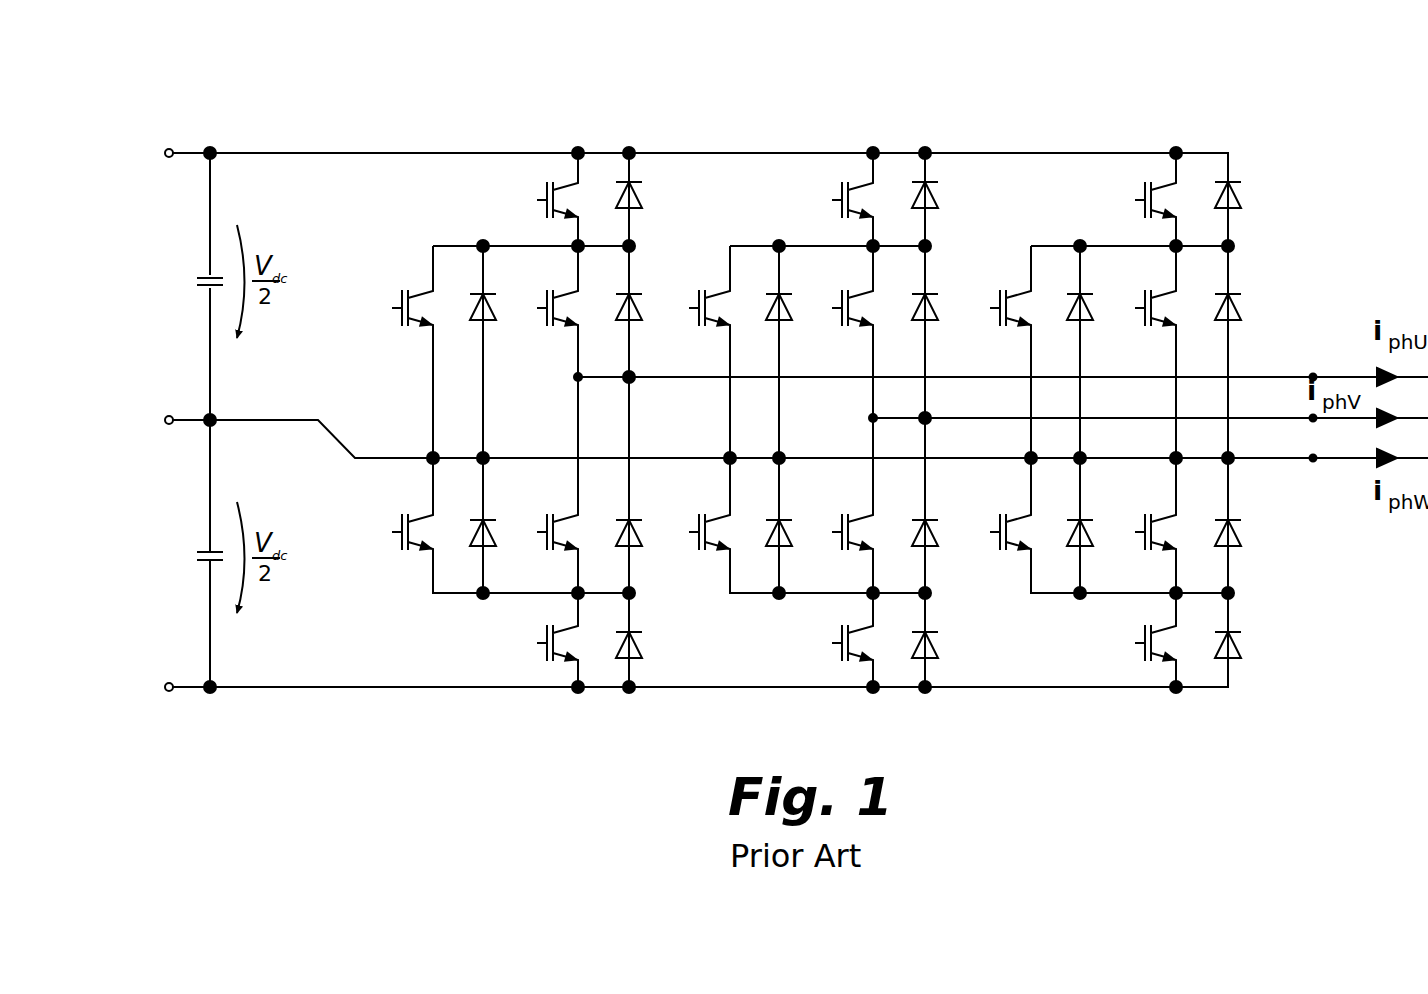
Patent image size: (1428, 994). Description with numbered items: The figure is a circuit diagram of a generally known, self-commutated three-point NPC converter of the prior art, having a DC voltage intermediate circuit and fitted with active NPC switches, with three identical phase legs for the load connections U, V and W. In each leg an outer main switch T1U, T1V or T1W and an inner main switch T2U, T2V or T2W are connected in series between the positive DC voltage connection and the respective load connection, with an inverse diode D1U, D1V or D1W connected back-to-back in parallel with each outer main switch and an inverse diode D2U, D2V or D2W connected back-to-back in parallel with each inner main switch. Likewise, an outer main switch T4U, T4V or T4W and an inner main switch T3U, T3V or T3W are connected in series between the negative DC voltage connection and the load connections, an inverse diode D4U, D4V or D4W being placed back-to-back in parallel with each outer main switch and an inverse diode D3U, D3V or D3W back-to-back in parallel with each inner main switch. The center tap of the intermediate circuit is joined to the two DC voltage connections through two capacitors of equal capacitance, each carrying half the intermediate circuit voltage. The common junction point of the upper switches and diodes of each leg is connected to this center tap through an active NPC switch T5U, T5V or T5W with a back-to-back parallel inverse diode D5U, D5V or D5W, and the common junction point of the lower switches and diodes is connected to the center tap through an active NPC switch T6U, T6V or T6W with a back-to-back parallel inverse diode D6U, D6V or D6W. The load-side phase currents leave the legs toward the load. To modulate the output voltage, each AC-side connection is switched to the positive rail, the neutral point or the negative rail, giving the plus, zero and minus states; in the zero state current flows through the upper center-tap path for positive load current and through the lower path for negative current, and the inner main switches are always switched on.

The outer main switch T1U is at (533, 200).
The inner main switch T2U is at (540, 312).
The inner main switch T3U is at (545, 525).
The outer main switch T4U is at (532, 643).
The active NPC switch T5U is at (388, 308).
The active NPC switch T6U is at (386, 532).
The inverse diode D1U is at (658, 194).
The inverse diode D2U is at (640, 310).
The inverse diode D3U is at (645, 535).
The inverse diode D4U is at (660, 651).
The inverse diode D5U is at (490, 304).
The inverse diode D6U is at (492, 535).
The outer main switch T1V is at (830, 200).
The inner main switch T2V is at (836, 315).
The inner main switch T3V is at (840, 526).
The outer main switch T4V is at (828, 643).
The active NPC switch T5V is at (698, 300).
The active NPC switch T6V is at (698, 542).
The inverse diode D1V is at (953, 193).
The inverse diode D2V is at (936, 310).
The inverse diode D3V is at (940, 537).
The inverse diode D4V is at (958, 651).
The inverse diode D5V is at (786, 305).
The inverse diode D6V is at (790, 535).
The outer main switch T1W is at (1126, 200).
The inner main switch T2W is at (1138, 315).
The inner main switch T3W is at (1142, 527).
The outer main switch T4W is at (1127, 643).
The active NPC switch T5W is at (998, 302).
The active NPC switch T6W is at (996, 525).
The inverse diode D1W is at (1260, 195).
The inverse diode D2W is at (1262, 295).
The inverse diode D3W is at (1264, 540).
The inverse diode D4W is at (1264, 651).
The inverse diode D5W is at (1087, 308).
The inverse diode D6W is at (1092, 535).